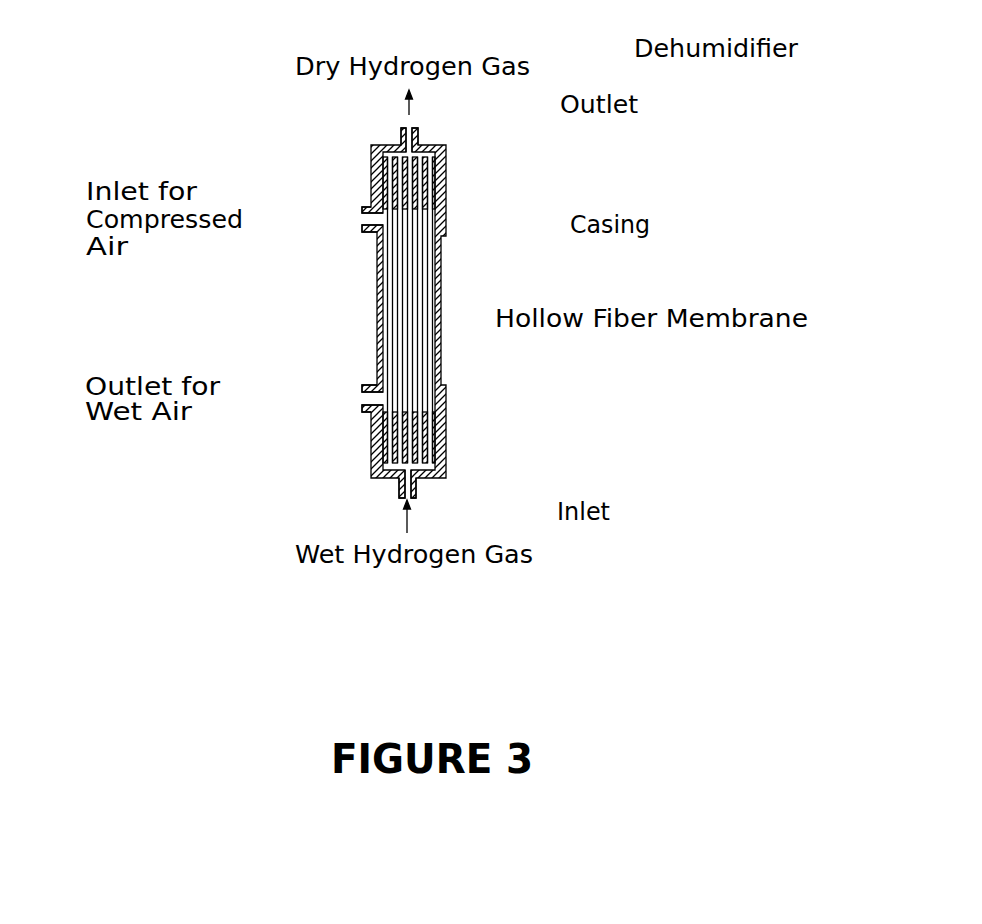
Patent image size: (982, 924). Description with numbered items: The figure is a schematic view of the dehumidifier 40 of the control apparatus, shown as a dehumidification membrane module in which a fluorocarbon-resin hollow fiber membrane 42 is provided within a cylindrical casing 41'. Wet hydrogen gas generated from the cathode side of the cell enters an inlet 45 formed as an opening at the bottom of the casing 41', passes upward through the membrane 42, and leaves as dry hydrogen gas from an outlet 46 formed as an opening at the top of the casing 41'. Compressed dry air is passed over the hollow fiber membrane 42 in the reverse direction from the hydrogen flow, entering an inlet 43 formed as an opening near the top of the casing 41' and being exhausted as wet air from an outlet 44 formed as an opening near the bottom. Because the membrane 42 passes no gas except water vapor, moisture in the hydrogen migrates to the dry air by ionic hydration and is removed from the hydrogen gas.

The dehumidifier 40 is at (644, 152).
The cylindrical casing 41' is at (460, 313).
The hollow fiber membrane 42 is at (423, 325).
The inlet 43 is at (343, 220).
The outlet 44 is at (350, 401).
The inlet 45 is at (409, 498).
The outlet 46 is at (416, 128).